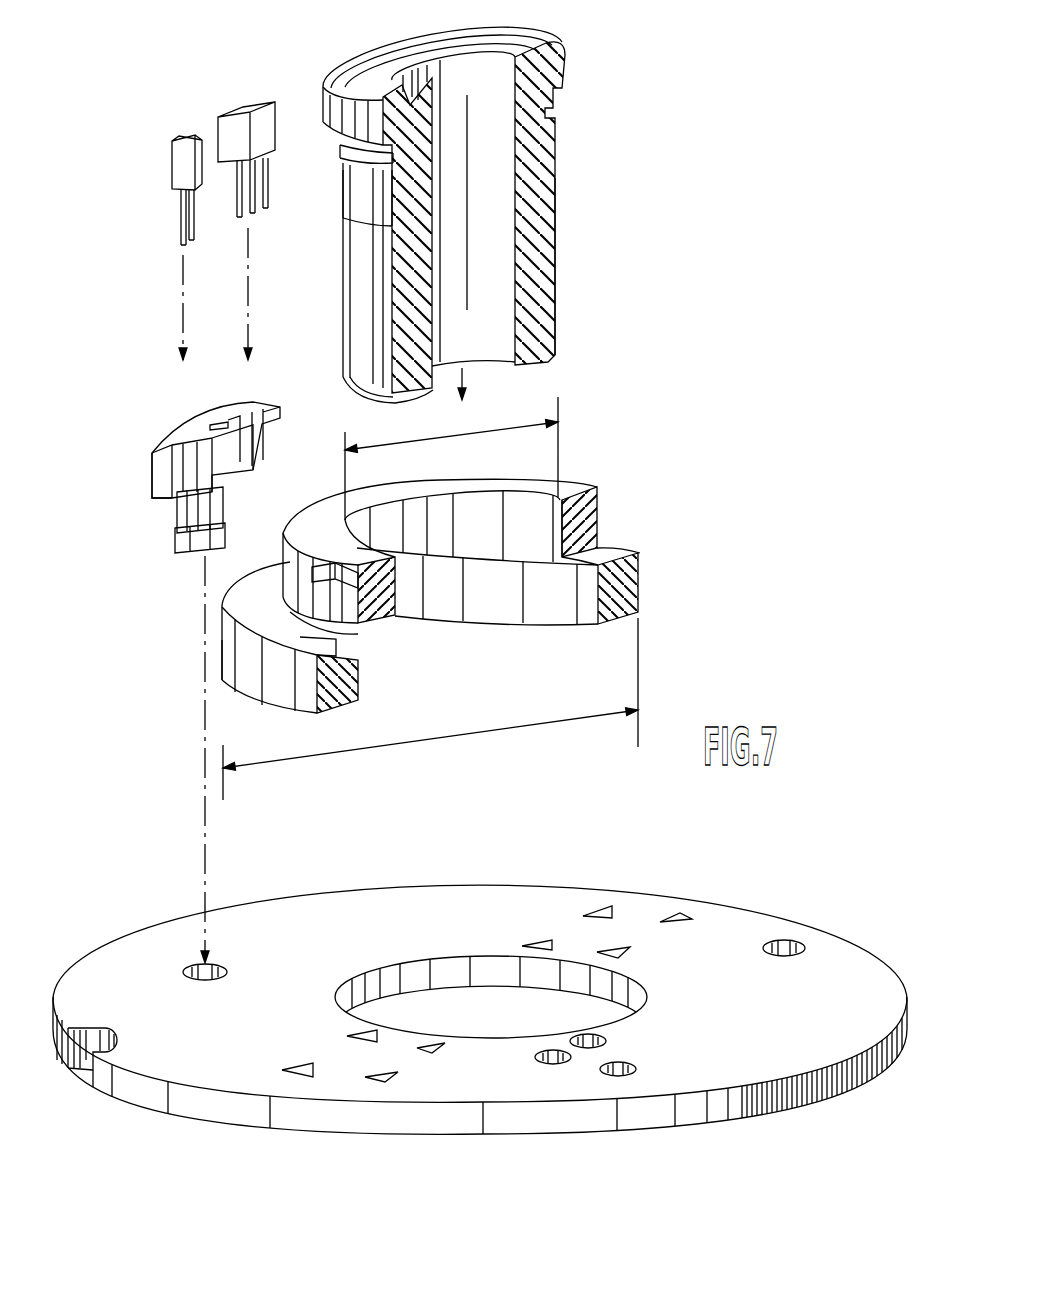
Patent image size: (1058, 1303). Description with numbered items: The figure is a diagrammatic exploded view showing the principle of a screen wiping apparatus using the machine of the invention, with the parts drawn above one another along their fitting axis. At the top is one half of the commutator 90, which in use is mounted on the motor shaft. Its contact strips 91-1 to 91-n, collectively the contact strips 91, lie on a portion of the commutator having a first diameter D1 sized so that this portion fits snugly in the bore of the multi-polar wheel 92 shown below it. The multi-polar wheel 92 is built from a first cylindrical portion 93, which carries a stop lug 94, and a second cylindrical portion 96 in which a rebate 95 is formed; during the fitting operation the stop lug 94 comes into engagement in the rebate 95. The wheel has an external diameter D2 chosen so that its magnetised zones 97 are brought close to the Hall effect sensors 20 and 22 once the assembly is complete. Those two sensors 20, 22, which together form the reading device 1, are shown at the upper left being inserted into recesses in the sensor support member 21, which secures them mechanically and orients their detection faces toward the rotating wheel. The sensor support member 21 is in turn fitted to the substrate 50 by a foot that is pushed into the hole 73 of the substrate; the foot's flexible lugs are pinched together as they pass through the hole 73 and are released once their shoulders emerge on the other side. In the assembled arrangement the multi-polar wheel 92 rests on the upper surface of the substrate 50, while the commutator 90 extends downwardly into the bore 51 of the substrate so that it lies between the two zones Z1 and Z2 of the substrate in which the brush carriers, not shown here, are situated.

The reading device 1 is at (140, 485).
The Hall effect sensor 20 is at (247, 113).
The sensor support member 21 is at (190, 422).
The Hall effect sensor 22 is at (192, 136).
The substrate 50 is at (227, 1062).
The bore of the substrate 51 is at (605, 987).
The hole 73 is at (193, 965).
The commutator 90 is at (572, 70).
The contact strips 91 is at (372, 310).
The contact strip 91-1 is at (392, 272).
The contact strip 91-n is at (536, 262).
The multi-polar wheel 92 is at (640, 587).
The first cylindrical portion 93 is at (572, 485).
The stop lug 94 is at (345, 580).
The rebate 95 is at (338, 647).
The second cylindrical portion 96 is at (344, 694).
The magnetised zones 97 is at (285, 688).
The first diameter D1 is at (451, 458).
The external diameter D2 is at (430, 709).
The zone Z1 is at (624, 912).
The zone Z2 is at (384, 1046).